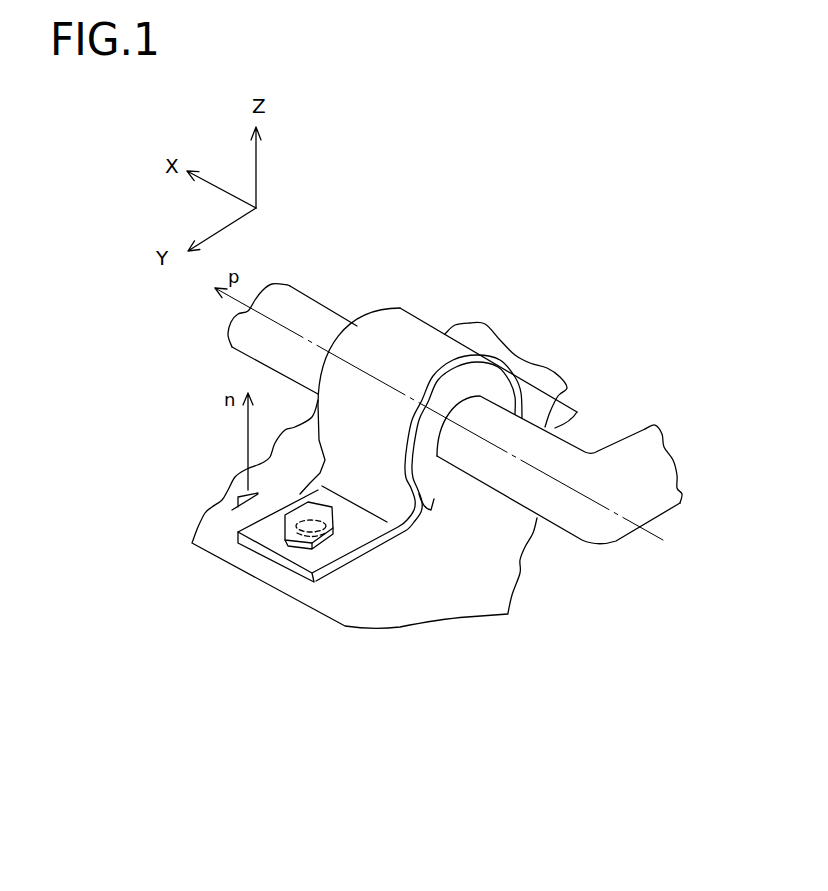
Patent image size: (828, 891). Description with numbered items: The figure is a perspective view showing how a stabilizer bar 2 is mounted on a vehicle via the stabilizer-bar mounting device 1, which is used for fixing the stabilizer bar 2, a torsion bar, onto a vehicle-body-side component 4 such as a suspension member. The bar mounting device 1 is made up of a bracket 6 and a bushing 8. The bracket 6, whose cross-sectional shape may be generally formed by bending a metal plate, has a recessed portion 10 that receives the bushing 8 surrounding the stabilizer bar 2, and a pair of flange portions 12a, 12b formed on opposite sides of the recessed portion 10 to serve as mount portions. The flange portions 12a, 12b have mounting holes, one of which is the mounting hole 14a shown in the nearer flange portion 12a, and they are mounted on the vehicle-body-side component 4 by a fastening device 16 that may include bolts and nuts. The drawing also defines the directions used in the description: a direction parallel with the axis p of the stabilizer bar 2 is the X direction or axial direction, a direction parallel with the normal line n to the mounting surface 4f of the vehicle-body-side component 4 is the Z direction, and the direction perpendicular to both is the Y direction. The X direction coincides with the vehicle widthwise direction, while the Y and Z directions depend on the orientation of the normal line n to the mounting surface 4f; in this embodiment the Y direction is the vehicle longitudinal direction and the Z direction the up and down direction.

The stabilizer-bar mounting device 1 is at (433, 292).
The stabilizer bar 2 is at (608, 457).
The vehicle-body-side component 4 is at (553, 380).
The mounting surface 4f is at (492, 593).
The bracket 6 is at (382, 288).
The bushing 8 is at (442, 490).
The recessed portion 10 is at (356, 352).
The flange portion 12a is at (238, 531).
The flange portion 12b is at (578, 410).
The mounting hole 14a is at (302, 543).
The fastening device 16 is at (333, 567).